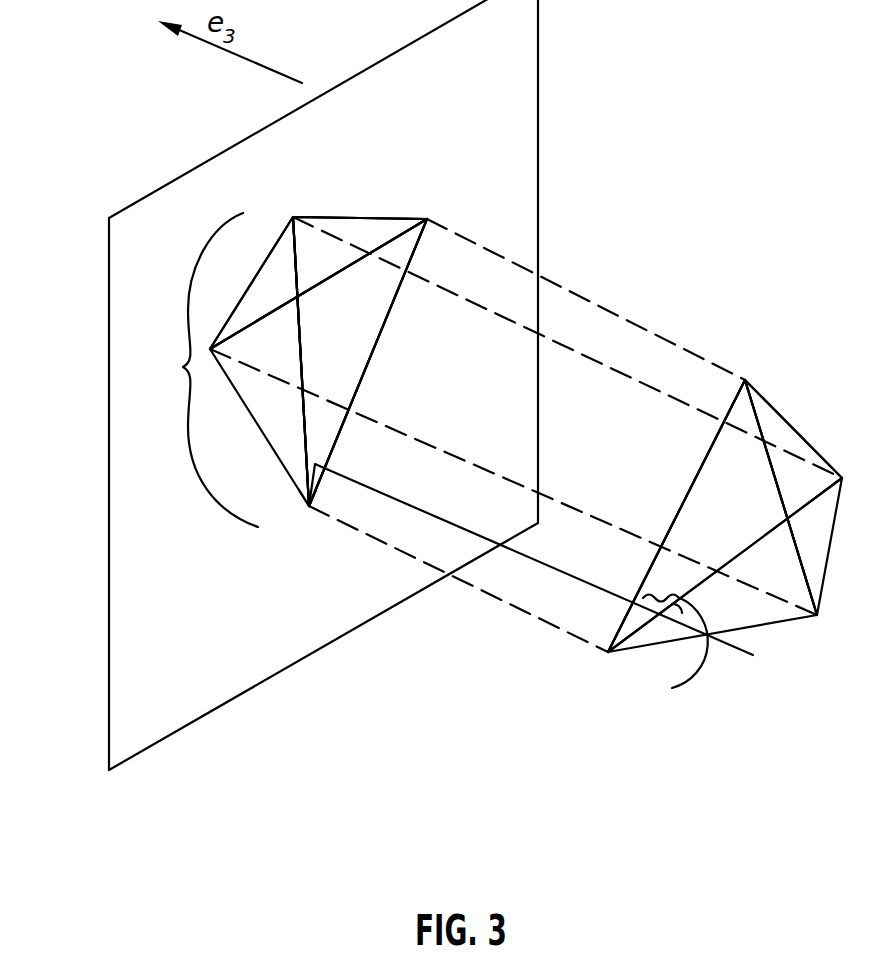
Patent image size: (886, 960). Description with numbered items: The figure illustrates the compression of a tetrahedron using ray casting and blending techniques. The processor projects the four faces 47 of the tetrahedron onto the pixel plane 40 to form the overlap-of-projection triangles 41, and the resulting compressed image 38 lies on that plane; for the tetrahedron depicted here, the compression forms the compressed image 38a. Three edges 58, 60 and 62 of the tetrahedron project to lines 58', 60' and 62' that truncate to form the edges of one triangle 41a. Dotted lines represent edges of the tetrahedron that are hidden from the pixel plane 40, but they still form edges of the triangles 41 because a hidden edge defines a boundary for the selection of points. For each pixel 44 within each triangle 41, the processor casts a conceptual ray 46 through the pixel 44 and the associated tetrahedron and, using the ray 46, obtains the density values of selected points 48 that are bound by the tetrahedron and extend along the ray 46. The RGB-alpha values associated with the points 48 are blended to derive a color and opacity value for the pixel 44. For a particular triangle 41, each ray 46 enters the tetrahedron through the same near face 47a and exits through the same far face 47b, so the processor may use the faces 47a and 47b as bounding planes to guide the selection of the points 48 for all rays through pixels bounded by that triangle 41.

The compressed image 38 is at (183, 367).
The compressed image 38a is at (183, 367).
The pixel plane 40 is at (108, 668).
The triangle 41 is at (337, 268).
The triangle 41a is at (357, 375).
The pixel 44 is at (306, 486).
The ray 46 is at (733, 648).
The face 47 is at (726, 545).
The near face 47a is at (824, 493).
The far face 47b is at (758, 493).
The points 48 is at (675, 651).
The edge 58 is at (732, 570).
The line 58' is at (259, 361).
The edge 60 is at (676, 516).
The line 60' is at (368, 362).
The edge 62 is at (807, 488).
The line 62' is at (333, 284).